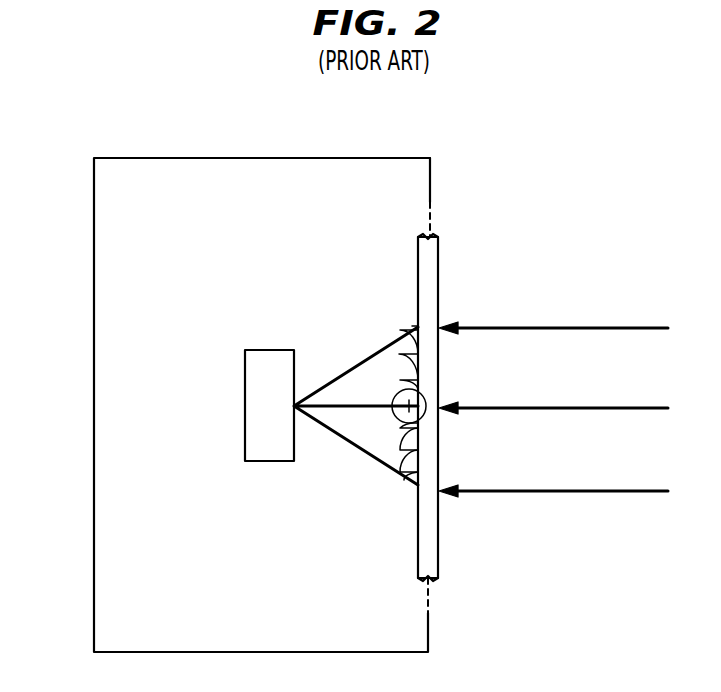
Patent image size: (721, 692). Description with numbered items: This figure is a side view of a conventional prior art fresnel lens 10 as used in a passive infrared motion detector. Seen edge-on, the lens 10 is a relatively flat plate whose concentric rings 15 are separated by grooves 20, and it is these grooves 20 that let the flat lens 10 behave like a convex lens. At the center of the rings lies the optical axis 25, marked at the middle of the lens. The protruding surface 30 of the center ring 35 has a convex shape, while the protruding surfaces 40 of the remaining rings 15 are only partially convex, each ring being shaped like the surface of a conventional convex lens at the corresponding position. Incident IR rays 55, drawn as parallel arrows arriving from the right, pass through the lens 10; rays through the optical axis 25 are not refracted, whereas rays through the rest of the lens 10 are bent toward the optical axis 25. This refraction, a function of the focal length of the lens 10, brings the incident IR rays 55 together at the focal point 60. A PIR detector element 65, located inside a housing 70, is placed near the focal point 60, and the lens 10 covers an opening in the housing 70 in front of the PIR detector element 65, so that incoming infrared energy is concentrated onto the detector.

The fresnel lens 10 is at (438, 553).
The concentric rings 15 is at (411, 332).
The grooves 20 is at (392, 346).
The optical axis 25 is at (412, 402).
The protruding surface 30 is at (398, 424).
The center ring 35 is at (404, 436).
The protruding surfaces 40 is at (408, 453).
The incident IR rays 55 is at (560, 510).
The focal point 60 is at (306, 440).
The PIR detector element 65 is at (245, 415).
The housing 70 is at (94, 518).